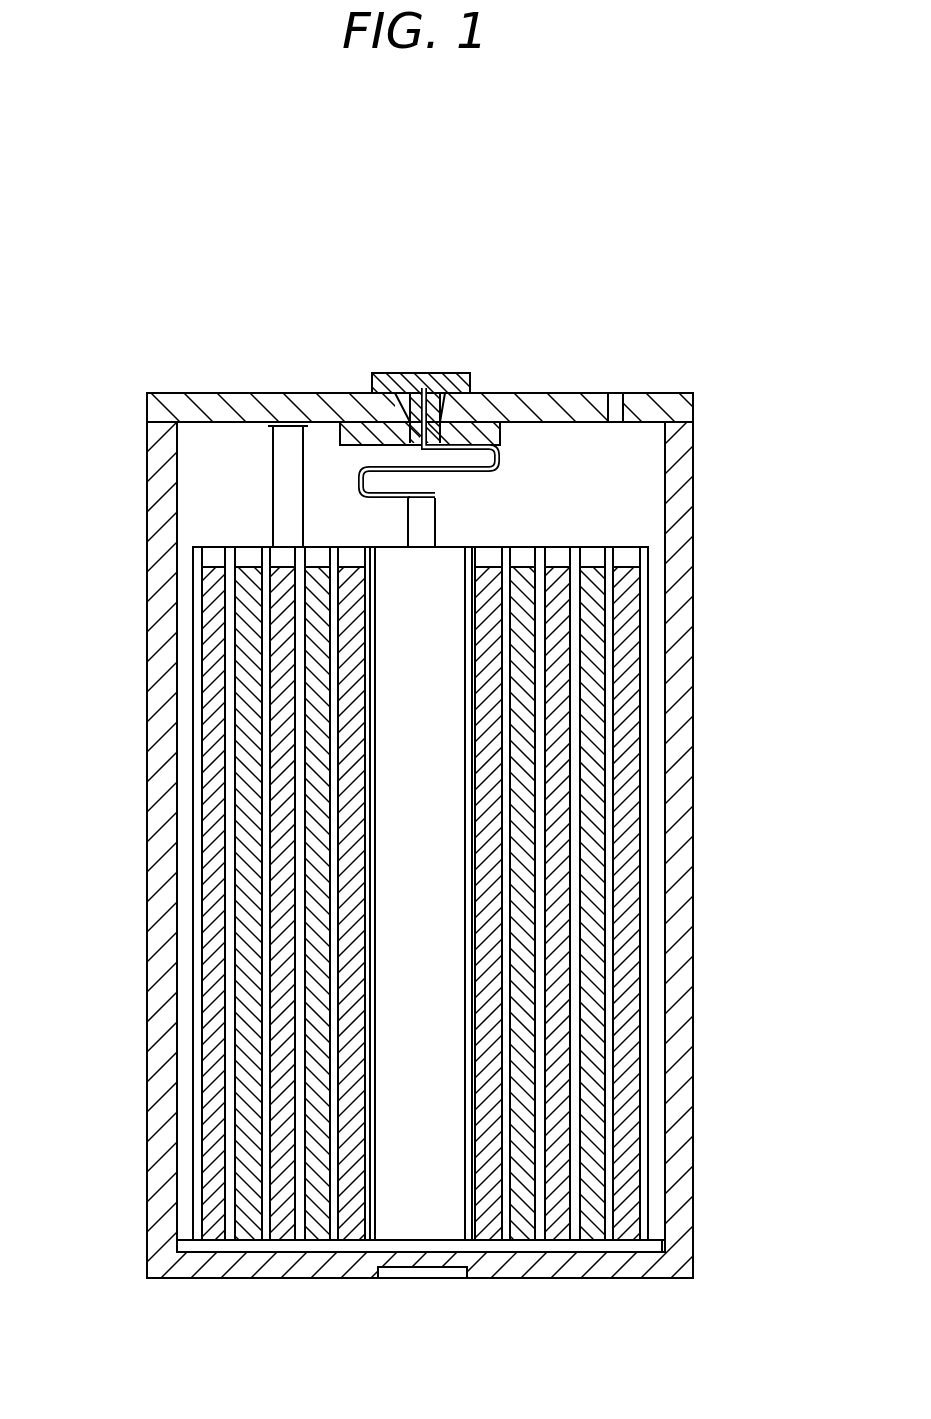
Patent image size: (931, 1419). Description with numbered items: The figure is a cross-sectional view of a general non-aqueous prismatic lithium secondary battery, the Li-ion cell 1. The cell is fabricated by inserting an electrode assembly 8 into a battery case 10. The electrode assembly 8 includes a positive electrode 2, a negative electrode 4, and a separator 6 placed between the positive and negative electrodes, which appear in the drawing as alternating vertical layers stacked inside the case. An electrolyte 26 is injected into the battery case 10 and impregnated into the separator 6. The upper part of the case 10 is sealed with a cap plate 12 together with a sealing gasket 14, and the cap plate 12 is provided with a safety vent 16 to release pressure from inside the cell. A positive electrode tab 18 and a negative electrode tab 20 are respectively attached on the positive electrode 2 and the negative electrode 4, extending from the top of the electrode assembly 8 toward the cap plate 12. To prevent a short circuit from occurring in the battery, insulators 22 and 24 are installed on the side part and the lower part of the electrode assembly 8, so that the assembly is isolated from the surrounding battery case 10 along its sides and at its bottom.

The Li-ion cell 1 is at (760, 539).
The positive electrode 2 is at (642, 1110).
The negative electrode 4 is at (248, 1063).
The separator 6 is at (232, 1182).
The electrode assembly 8 is at (580, 522).
The battery case 10 is at (158, 517).
The cap plate 12 is at (535, 395).
The sealing gasket 14 is at (383, 382).
The safety vent 16 is at (617, 395).
The positive electrode tab 18 is at (288, 440).
The negative electrode tab 20 is at (429, 381).
The insulator 22 is at (183, 802).
The insulator 24 is at (317, 1245).
The electrolyte 26 is at (612, 1178).